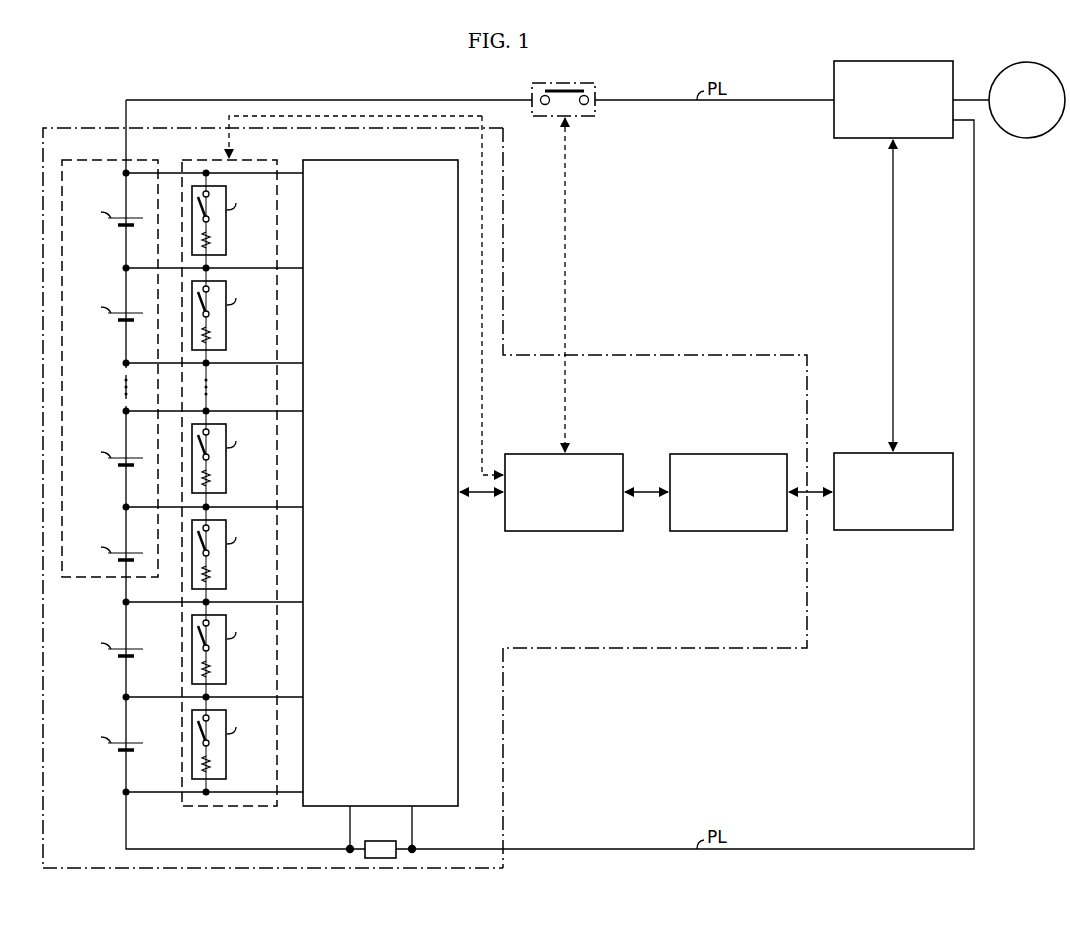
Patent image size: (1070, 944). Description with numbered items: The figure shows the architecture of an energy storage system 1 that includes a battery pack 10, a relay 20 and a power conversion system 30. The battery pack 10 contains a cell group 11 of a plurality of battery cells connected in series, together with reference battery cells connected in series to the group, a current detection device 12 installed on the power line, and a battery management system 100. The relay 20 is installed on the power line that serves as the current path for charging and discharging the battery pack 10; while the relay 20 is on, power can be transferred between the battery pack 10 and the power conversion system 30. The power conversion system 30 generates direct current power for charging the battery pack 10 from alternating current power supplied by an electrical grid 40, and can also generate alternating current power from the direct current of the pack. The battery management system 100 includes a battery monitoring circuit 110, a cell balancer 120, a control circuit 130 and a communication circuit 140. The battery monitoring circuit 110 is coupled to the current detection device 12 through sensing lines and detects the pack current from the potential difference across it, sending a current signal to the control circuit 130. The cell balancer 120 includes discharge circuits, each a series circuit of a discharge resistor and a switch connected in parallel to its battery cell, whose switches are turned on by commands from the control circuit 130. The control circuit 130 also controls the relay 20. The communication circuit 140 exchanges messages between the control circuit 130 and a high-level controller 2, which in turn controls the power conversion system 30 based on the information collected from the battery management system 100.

The energy storage system 1 is at (87, 78).
The battery pack 10 is at (101, 128).
The cell group 11 is at (101, 160).
The current detection device 12 is at (380, 841).
The relay 20 is at (583, 83).
The power conversion system 30 is at (913, 61).
The electrical grid 40 is at (1029, 62).
The battery management system 100 is at (690, 337).
The battery monitoring circuit 110 is at (343, 160).
The cell balancer 120 is at (211, 160).
The control circuit 130 is at (583, 454).
The communication circuit 140 is at (747, 454).
The high-level controller 2 is at (911, 453).